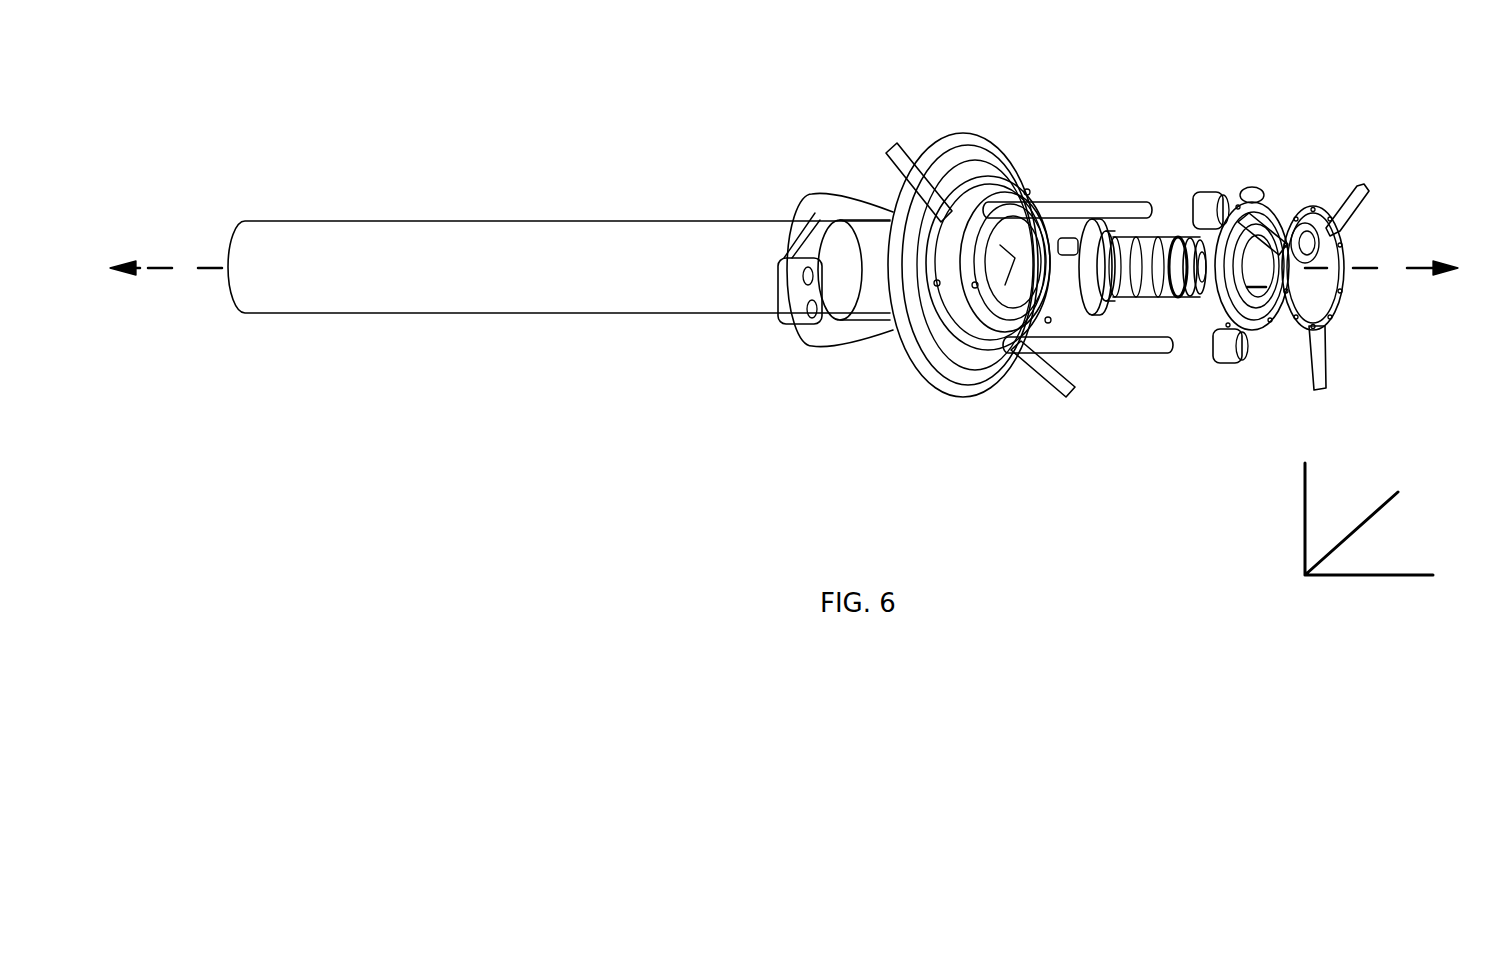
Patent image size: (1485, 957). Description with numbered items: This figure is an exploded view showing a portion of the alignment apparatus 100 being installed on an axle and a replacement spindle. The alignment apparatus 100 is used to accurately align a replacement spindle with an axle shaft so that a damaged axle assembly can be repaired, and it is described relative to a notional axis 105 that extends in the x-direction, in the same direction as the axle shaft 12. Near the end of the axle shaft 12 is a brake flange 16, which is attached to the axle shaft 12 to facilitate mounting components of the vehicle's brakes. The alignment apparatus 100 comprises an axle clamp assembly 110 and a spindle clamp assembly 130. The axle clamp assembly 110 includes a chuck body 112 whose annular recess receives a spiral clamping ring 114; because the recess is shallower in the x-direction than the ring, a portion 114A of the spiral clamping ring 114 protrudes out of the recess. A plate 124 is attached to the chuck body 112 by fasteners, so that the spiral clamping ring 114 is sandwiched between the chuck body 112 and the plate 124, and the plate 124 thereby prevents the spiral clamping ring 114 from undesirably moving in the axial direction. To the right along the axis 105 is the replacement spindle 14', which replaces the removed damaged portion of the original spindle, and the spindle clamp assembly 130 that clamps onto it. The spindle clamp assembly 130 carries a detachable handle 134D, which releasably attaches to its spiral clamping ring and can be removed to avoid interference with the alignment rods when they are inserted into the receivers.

The alignment apparatus 100 is at (756, 86).
The notional axis 105 is at (160, 268).
The axle shaft 12 is at (405, 240).
The brake flange 16 is at (836, 206).
The axle clamp assembly 110 is at (915, 90).
The chuck body 112 is at (962, 392).
The spiral clamping ring 114 is at (987, 375).
The portion of spiral clamping ring 114A is at (988, 263).
The plate 124 is at (987, 325).
The replacement spindle 14' is at (1150, 210).
The spindle clamp assembly 130 is at (1288, 93).
The detachable handle 134D is at (1353, 211).